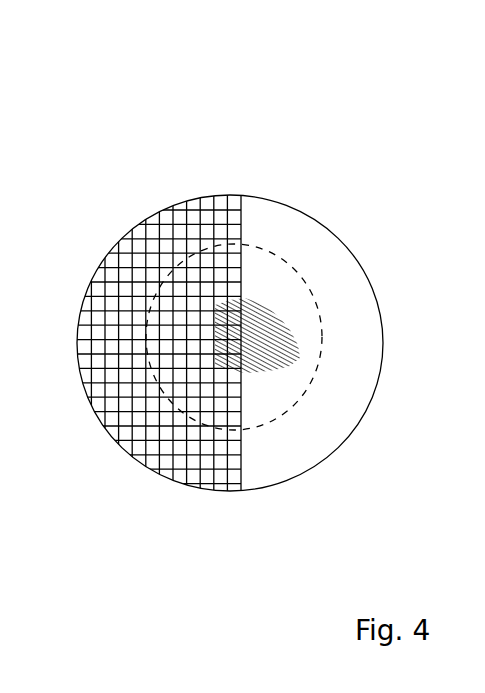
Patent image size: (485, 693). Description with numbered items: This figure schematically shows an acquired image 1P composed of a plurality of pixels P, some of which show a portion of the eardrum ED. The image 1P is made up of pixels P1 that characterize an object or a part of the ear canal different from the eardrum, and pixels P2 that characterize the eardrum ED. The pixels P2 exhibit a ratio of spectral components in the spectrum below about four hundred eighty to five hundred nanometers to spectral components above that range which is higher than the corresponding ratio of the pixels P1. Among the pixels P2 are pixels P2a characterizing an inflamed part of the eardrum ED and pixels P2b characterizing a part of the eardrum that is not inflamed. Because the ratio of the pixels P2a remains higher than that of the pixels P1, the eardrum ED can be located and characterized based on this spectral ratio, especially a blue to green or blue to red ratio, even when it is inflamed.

The acquired image 1P is at (152, 125).
The pixels P is at (115, 421).
The pixels characterizing an object or part of the ear canal different than the eard P1 is at (165, 263).
The pixels characterizing the eardrum P2 is at (177, 287).
The pixels characterizing an inflamed part of the eardrum P2a is at (240, 340).
The pixels characterizing a part of the eardrum which is not inflamed P2b is at (243, 263).
The eardrum ED is at (299, 277).